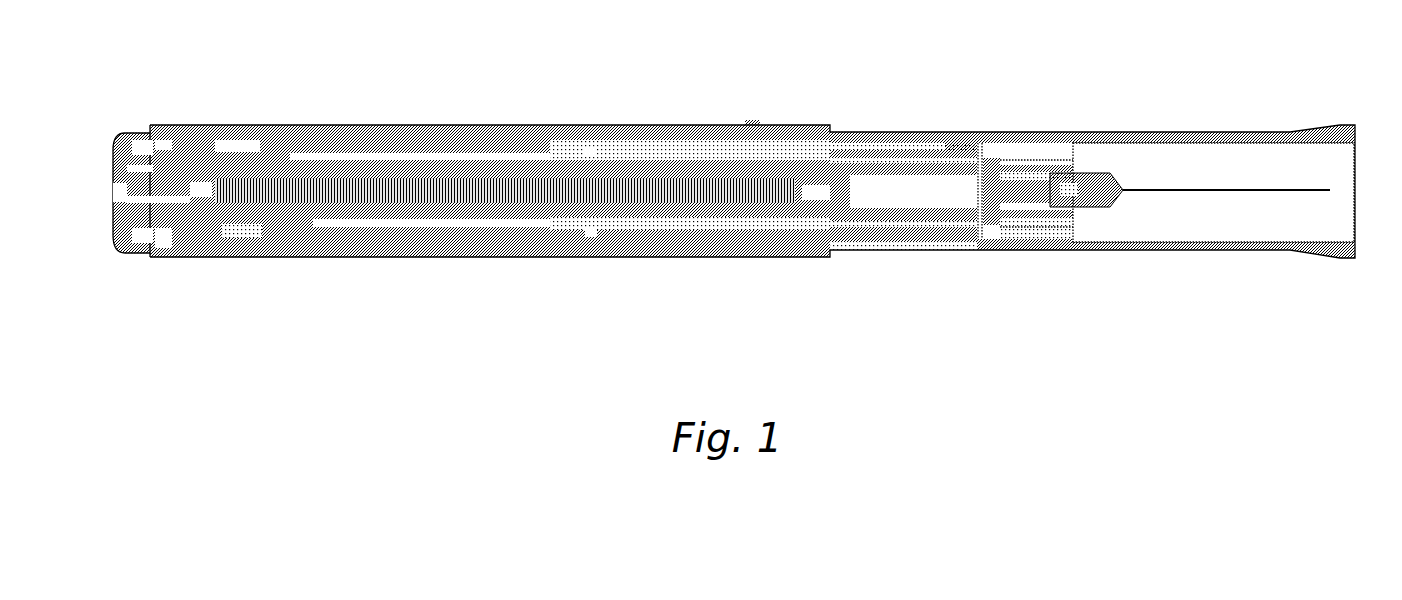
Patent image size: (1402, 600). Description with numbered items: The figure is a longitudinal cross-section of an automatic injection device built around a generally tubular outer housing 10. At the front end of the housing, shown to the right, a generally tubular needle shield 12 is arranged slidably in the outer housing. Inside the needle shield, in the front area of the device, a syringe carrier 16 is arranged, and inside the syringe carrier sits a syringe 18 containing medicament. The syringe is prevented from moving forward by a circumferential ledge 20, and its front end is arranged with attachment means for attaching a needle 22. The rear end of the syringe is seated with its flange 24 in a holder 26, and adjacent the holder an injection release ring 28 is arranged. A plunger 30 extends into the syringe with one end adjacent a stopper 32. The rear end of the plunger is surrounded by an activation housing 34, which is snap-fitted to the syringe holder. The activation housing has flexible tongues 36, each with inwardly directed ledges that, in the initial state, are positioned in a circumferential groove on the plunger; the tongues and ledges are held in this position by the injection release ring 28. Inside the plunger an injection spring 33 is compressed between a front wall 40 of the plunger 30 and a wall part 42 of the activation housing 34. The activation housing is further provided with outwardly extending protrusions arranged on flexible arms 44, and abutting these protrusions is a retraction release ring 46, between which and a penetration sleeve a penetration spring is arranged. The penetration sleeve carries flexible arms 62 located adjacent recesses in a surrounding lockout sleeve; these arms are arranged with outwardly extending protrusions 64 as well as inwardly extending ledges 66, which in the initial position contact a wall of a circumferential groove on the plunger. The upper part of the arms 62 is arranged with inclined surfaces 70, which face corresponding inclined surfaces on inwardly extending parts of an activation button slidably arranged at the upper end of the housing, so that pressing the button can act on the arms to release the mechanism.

The outer housing 10 is at (520, 233).
The needle shield 12 is at (1080, 247).
The syringe carrier 16 is at (943, 167).
The syringe 18 is at (890, 223).
The circumferential ledge 20 is at (973, 223).
The needle 22 is at (1197, 192).
The flange 24 is at (623, 233).
The holder 26 is at (613, 147).
The injection release ring 28 is at (600, 160).
The plunger 30 is at (377, 212).
The stopper 32 is at (807, 207).
The injection spring 33 is at (293, 190).
The activation housing 34 is at (430, 170).
The flexible tongues 36 is at (587, 233).
The front wall 40 is at (790, 177).
The wall part 42 is at (200, 180).
The flexible arms 44 is at (342, 167).
The retraction release ring 46 is at (318, 228).
The flexible arms 62 is at (225, 155).
The outwardly extending protrusions 64 is at (190, 233).
The inwardly extending ledges 66 is at (210, 223).
The inclined surfaces 70 is at (160, 227).